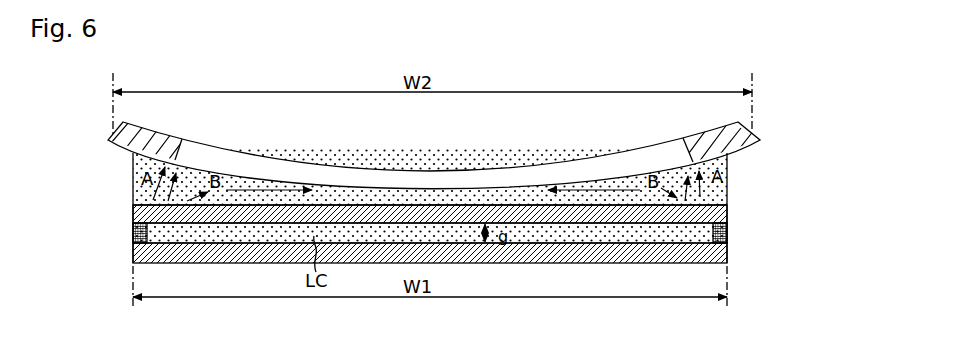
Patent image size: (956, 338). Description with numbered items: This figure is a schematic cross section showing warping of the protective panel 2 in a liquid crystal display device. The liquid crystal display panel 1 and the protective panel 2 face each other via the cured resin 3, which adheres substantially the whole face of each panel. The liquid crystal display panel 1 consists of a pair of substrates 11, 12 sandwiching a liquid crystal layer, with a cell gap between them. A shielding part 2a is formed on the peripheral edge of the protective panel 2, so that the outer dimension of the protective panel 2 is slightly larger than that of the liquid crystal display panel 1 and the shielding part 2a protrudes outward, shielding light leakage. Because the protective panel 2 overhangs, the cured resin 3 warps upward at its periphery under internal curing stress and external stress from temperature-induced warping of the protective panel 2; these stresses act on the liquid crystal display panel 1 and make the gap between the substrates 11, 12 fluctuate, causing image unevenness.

The liquid crystal display panel 1 is at (376, 240).
The substrate 11 is at (135, 218).
The substrate 12 is at (135, 262).
The protective panel 2 is at (428, 182).
The shielding part 2a is at (142, 140).
The cured resin 3 is at (470, 201).